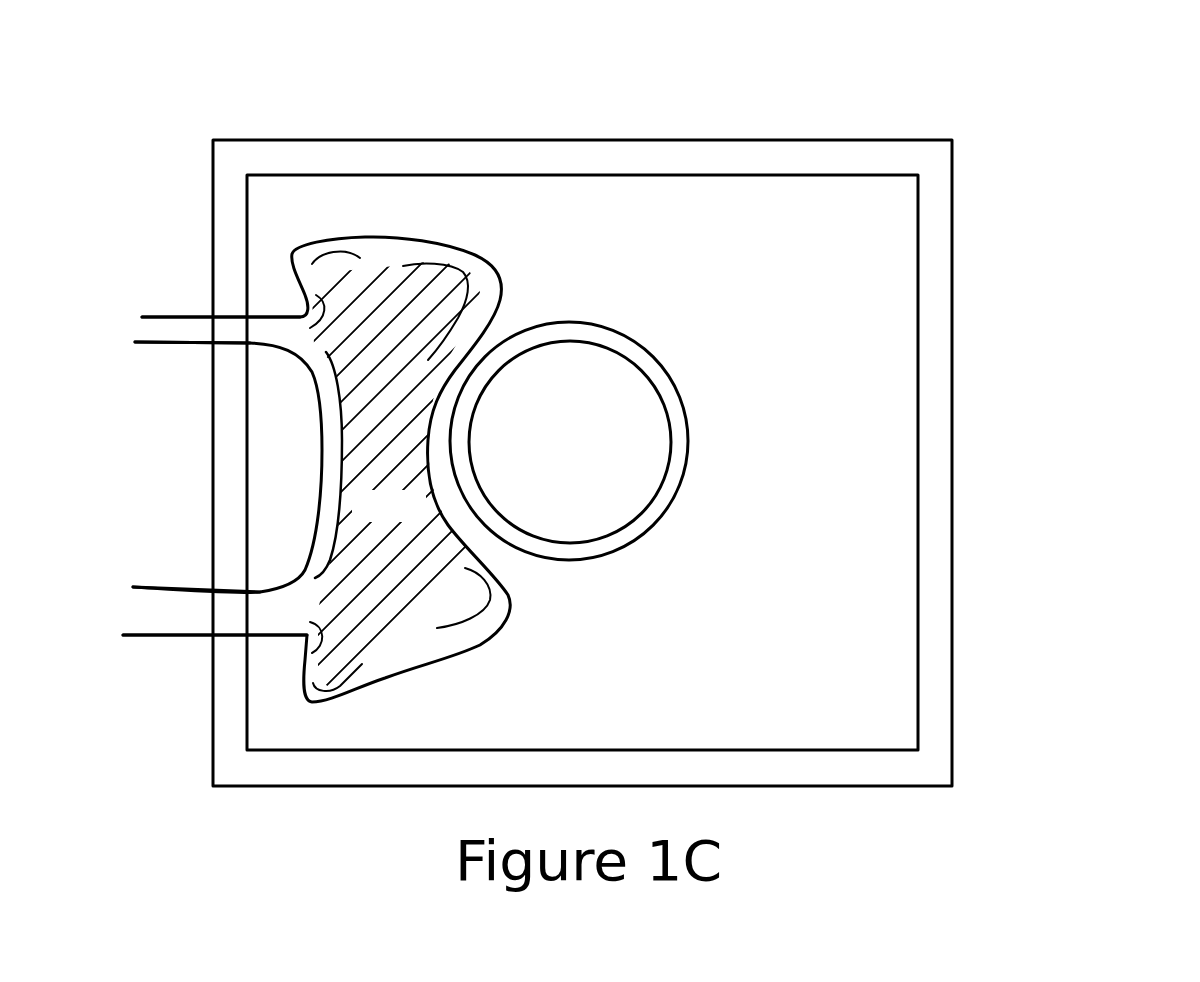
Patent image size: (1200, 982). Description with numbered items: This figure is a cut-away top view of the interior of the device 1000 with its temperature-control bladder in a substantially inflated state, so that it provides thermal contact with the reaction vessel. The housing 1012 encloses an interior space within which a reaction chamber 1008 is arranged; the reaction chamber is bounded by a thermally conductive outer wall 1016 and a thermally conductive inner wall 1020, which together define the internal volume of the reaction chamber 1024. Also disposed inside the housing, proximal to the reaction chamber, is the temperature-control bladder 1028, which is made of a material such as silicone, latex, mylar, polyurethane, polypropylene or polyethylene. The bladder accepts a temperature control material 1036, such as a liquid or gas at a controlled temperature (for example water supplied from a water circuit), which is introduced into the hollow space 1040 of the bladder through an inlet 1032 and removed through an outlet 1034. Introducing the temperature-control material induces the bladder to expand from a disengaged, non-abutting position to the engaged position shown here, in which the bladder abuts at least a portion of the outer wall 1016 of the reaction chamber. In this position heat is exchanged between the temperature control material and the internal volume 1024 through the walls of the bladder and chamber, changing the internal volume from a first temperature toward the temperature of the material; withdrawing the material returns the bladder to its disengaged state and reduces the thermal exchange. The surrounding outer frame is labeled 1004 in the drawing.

The device 1000 is at (549, 116).
The housing 1004 is at (988, 537).
The reaction chamber 1008 is at (628, 485).
The housing 1012 is at (792, 267).
The thermally conductive outer wall 1016 is at (678, 498).
The thermally conductive inner wall 1020 is at (650, 499).
The internal volume of the reaction chamber 1024 is at (617, 435).
The temperature-control bladder 1028 is at (415, 684).
The inlet 1032 is at (185, 358).
The outlet 1034 is at (176, 652).
The temperature control material 1036 is at (388, 292).
The hollow space of the bladder 1040 is at (420, 520).